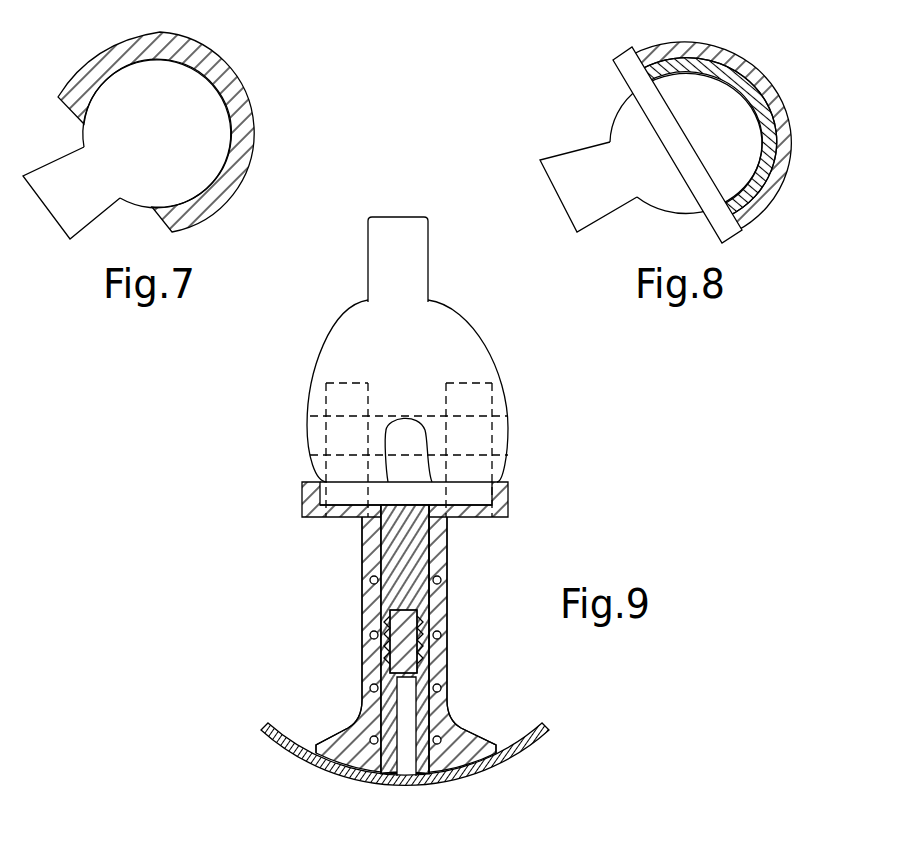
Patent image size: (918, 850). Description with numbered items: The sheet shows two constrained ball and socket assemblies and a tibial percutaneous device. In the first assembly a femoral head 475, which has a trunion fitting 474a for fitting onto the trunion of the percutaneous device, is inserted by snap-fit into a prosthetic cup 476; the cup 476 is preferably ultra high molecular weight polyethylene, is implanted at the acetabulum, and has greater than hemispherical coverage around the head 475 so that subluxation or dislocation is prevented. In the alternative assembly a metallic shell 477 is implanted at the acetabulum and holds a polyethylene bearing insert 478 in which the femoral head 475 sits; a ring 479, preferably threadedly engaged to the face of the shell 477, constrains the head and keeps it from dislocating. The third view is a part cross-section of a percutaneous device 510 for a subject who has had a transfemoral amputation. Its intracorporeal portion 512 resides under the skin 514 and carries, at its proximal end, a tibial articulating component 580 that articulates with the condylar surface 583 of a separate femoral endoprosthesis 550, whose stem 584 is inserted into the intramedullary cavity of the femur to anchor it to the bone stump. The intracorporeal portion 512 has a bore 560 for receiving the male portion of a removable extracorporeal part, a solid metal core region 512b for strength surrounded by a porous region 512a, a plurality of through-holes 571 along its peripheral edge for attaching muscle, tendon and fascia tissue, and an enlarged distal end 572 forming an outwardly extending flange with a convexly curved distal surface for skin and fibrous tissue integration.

In FIG. 7, the trunion fitting 474a is at (83, 202).
In FIG. 7, the femoral head 475 is at (140, 80).
In FIG. 8, the femoral head 475 is at (658, 180).
In FIG. 7, the prosthetic cup 476 is at (256, 104).
In FIG. 8, the metallic shell 477 is at (753, 77).
In FIG. 8, the bearing insert 478 is at (765, 168).
In FIG. 8, the ring 479 is at (630, 72).
In FIG. 9, the endoprosthesis 550 is at (496, 337).
In FIG. 9, the stem 584 is at (387, 267).
In FIG. 9, the condylar surface 583 is at (478, 488).
In FIG. 9, the tibial articulating component 580 is at (507, 500).
In FIG. 9, the percutaneous device 510 is at (347, 648).
In FIG. 9, the porous region 512a is at (368, 543).
In FIG. 9, the core region 512b is at (407, 538).
In FIG. 9, the intracorporeal portion 512 is at (458, 682).
In FIG. 9, the through-holes 571 is at (441, 635).
In FIG. 9, the distal end 572 is at (353, 747).
In FIG. 9, the bore 560 is at (407, 753).
In FIG. 9, the skin 514 is at (543, 727).